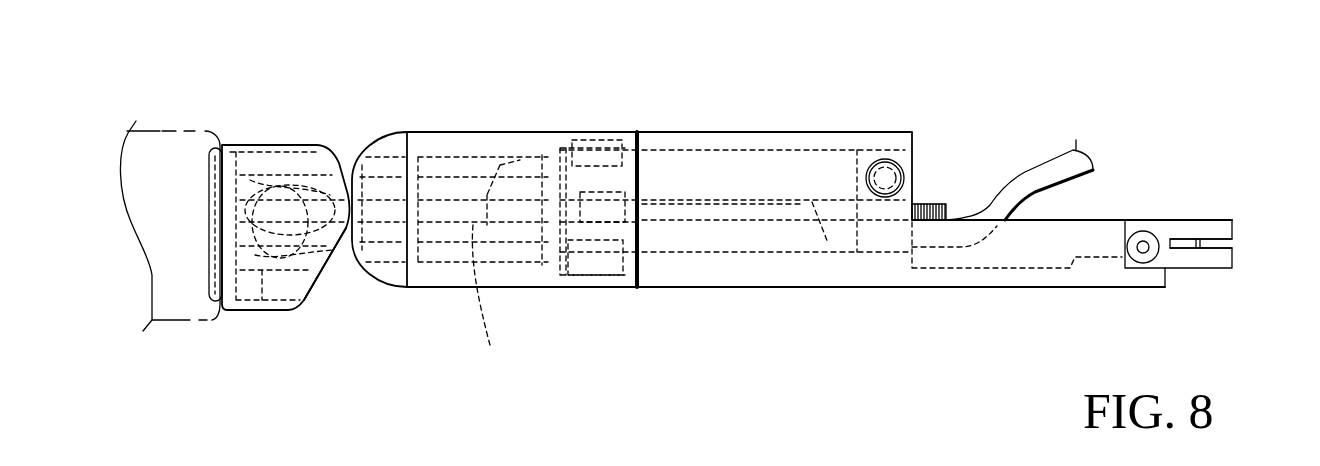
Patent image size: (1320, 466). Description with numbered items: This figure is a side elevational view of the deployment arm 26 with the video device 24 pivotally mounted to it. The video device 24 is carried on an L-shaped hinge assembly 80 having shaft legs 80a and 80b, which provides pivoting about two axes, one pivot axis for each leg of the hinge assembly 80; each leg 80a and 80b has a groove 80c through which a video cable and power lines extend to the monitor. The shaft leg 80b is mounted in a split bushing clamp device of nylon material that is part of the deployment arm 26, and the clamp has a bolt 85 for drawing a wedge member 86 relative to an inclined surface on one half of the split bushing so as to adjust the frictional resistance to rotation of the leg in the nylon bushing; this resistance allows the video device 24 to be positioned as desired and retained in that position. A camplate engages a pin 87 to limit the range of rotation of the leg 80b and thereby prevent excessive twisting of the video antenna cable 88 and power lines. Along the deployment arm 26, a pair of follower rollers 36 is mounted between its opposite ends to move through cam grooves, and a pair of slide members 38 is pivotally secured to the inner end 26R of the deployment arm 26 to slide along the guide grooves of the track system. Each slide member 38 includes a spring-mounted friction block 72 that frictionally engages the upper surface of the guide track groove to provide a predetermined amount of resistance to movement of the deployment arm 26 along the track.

The video device 24 is at (155, 131).
The deployment arm 26 is at (775, 128).
The inner end of deployment arm 26R is at (1180, 268).
The follower rollers 36 is at (903, 169).
The slide members 38 is at (1200, 264).
The friction block 72 is at (1207, 222).
The hinge assembly 80 is at (266, 146).
The shaft leg 80a is at (327, 270).
The shaft leg 80b is at (500, 165).
The groove 80c is at (344, 167).
The bolt 85 is at (938, 204).
The wedge member 86 is at (456, 148).
The pin 87 is at (598, 272).
The video antenna cable 88 is at (1043, 184).